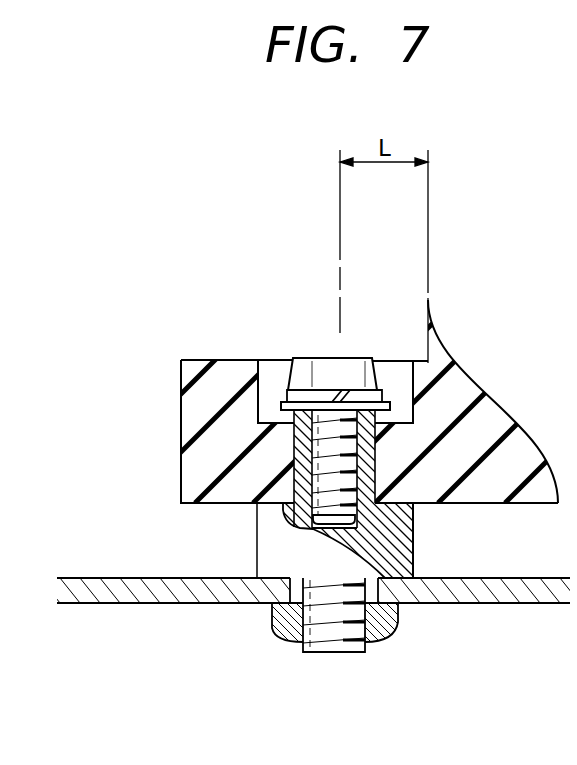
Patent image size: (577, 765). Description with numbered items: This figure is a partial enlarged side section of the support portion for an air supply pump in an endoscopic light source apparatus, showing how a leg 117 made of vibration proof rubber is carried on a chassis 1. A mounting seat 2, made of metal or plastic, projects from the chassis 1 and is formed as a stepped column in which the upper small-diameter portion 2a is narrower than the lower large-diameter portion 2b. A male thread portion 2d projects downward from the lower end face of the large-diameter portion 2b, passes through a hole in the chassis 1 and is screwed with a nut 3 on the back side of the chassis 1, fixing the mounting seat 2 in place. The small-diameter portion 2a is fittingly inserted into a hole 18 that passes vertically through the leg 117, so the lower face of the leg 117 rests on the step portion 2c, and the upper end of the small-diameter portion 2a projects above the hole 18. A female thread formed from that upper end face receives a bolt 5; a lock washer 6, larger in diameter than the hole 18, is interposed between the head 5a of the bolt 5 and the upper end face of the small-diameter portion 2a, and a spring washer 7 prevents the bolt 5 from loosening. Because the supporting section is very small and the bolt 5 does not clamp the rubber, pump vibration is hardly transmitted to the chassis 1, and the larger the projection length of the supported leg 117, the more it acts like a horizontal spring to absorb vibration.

The chassis 1 is at (148, 600).
The mounting seat 2 is at (236, 536).
The small-diameter portion 2a is at (372, 466).
The large-diameter portion 2b is at (413, 545).
The step portion 2c is at (283, 500).
The male thread portion 2d is at (327, 645).
The nut 3 is at (388, 628).
The bolt 5 is at (318, 440).
The head 5a is at (347, 368).
The lock washer 6 is at (281, 400).
The spring washer 7 is at (313, 398).
The hole 18 is at (294, 458).
The leg 117 is at (195, 367).